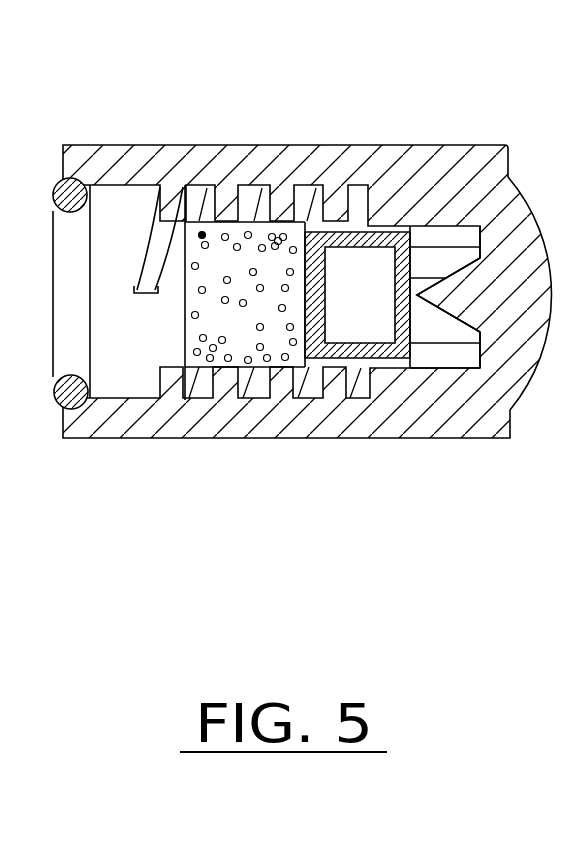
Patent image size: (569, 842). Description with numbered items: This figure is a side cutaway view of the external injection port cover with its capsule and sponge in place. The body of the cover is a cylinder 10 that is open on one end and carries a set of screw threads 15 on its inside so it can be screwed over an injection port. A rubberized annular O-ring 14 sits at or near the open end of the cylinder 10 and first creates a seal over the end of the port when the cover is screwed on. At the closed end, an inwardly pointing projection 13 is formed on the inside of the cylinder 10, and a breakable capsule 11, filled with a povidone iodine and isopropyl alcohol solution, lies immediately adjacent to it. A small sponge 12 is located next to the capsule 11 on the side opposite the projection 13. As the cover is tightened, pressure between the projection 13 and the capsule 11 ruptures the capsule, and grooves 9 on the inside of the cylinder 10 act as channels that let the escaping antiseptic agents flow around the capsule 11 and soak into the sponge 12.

The grooves 9 is at (465, 367).
The cylinder 10 is at (486, 163).
The breakable capsule 11 is at (362, 240).
The sponge 12 is at (208, 278).
The projection 13 is at (427, 305).
The O-ring 14 is at (88, 408).
The screw threads 15 is at (150, 268).